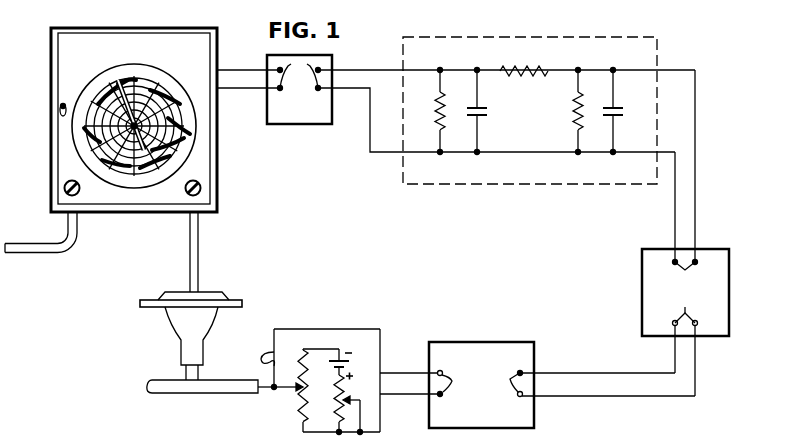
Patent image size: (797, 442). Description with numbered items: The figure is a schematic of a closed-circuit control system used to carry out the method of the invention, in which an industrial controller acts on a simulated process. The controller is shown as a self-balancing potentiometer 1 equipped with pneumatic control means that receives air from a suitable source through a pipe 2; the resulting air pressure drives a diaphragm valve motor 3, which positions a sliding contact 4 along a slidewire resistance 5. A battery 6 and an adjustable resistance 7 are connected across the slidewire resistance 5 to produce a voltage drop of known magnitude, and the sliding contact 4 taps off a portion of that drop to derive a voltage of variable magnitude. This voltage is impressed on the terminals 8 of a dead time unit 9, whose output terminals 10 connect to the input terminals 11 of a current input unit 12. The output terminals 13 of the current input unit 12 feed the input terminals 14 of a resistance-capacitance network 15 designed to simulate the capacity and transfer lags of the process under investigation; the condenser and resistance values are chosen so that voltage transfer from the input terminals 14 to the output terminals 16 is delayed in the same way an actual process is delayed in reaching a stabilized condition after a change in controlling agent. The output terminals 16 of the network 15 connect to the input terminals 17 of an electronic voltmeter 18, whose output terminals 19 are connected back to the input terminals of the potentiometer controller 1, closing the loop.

The self-balancing potentiometer 1 is at (53, 38).
The pipe 2 is at (25, 243).
The diaphragm valve motor 3 is at (183, 326).
The sliding contact 4 is at (293, 390).
The slidewire resistance 5 is at (306, 388).
The battery 6 is at (348, 362).
The adjustable resistance 7 is at (334, 396).
The terminals 8 is at (452, 384).
The dead time unit 9 is at (478, 342).
The output terminals 10 is at (504, 384).
The input terminals 11 is at (686, 308).
The current input unit 12 is at (650, 287).
The output terminals 13 is at (685, 274).
The input terminals 14 is at (614, 70).
The resistance-capacitance network 15 is at (530, 99).
The output terminals 16 is at (440, 68).
The input terminals 17 is at (299, 79).
The electronic voltmeter 18 is at (305, 124).
The output terminals 19 is at (299, 75).